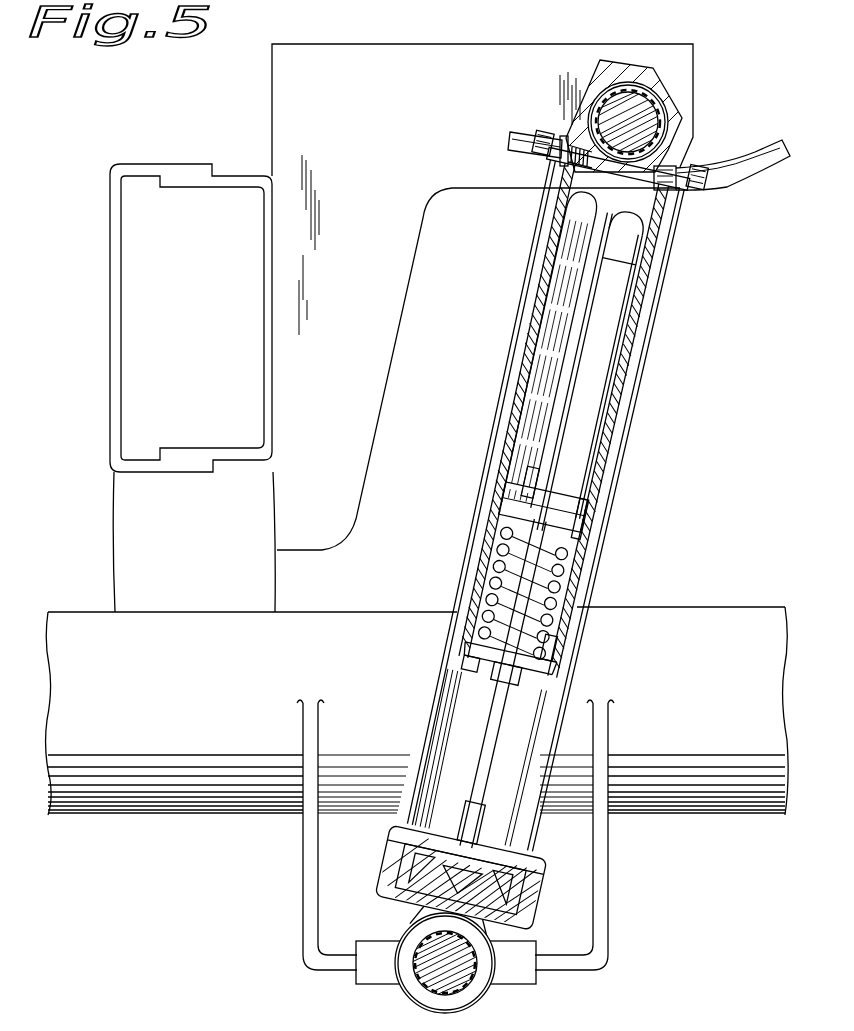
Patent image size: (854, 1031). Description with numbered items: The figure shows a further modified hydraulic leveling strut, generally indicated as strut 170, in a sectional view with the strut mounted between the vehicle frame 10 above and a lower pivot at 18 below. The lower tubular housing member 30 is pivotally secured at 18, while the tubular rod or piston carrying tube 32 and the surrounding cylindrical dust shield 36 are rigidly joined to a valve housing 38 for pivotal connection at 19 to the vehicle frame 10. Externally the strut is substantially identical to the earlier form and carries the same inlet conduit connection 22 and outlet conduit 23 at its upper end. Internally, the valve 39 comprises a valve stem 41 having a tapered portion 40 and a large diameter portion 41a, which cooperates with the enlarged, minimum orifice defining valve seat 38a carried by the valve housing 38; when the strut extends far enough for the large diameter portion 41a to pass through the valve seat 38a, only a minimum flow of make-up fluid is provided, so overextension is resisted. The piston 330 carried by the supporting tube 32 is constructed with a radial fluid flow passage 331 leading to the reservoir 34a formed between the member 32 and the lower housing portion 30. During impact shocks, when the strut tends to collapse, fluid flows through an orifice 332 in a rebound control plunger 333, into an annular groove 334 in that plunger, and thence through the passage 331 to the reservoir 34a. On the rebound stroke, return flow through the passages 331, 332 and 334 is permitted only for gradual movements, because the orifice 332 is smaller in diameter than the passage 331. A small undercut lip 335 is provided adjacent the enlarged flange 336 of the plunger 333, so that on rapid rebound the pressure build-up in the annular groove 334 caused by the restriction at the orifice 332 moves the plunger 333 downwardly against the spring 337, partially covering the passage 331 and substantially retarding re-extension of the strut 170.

The vehicle frame 10 is at (300, 130).
The pivotal connection to axle housing 18 is at (443, 968).
The pivotal connection to vehicle frame 19 is at (633, 110).
The inlet conduit connection 22 is at (535, 131).
The outlet conduit 23 is at (735, 183).
The tubular housing member 30 is at (440, 705).
The tubular rod 32 is at (634, 355).
The reservoir 34a is at (589, 455).
The dust shield 36 is at (524, 292).
The valve housing 38 is at (590, 373).
The valve seat 38a is at (567, 650).
The valve 39 is at (467, 598).
The tapered portion 40 is at (514, 550).
The valve stem 41 is at (493, 758).
The large diameter portion 41a is at (549, 500).
The strut 170 is at (634, 508).
The piston 330 is at (468, 622).
The radial fluid flow passage 331 is at (473, 587).
The orifice 332 is at (478, 590).
The rebound control plunger 333 is at (577, 560).
The annular groove 334 is at (575, 618).
The undercut lip 335 is at (577, 638).
The enlarged flange 336 is at (458, 640).
The spring 337 is at (580, 597).